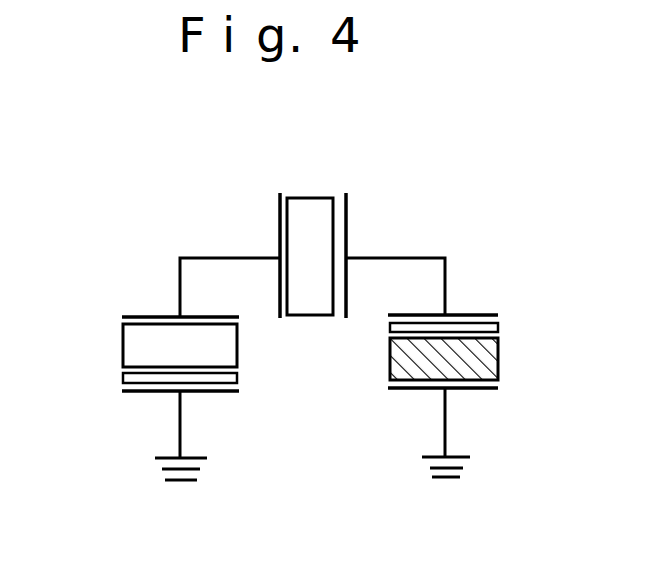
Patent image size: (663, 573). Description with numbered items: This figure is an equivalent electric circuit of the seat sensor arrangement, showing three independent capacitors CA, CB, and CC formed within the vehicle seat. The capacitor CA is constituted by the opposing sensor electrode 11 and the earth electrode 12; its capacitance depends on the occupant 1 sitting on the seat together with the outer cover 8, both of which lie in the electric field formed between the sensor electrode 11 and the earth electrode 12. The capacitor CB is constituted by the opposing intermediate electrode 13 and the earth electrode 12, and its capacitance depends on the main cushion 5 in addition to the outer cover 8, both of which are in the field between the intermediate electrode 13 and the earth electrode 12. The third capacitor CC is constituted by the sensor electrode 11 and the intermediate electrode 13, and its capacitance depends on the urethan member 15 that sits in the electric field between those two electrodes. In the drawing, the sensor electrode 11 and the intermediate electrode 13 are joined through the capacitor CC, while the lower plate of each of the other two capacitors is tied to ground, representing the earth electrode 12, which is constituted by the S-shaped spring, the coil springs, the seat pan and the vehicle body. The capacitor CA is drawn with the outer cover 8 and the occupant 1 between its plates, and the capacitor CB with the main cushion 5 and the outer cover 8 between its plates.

The occupant 1 is at (485, 360).
The main cushion 5 is at (123, 343).
The outer cover 8 is at (498, 327).
The sensor electrode 11 is at (427, 258).
The earth electrode 12 is at (445, 420).
The intermediate electrode 13 is at (200, 257).
The urethan member 15 is at (308, 216).
The capacitor CA is at (309, 310).
The capacitor CB is at (138, 300).
The capacitor CC is at (351, 224).